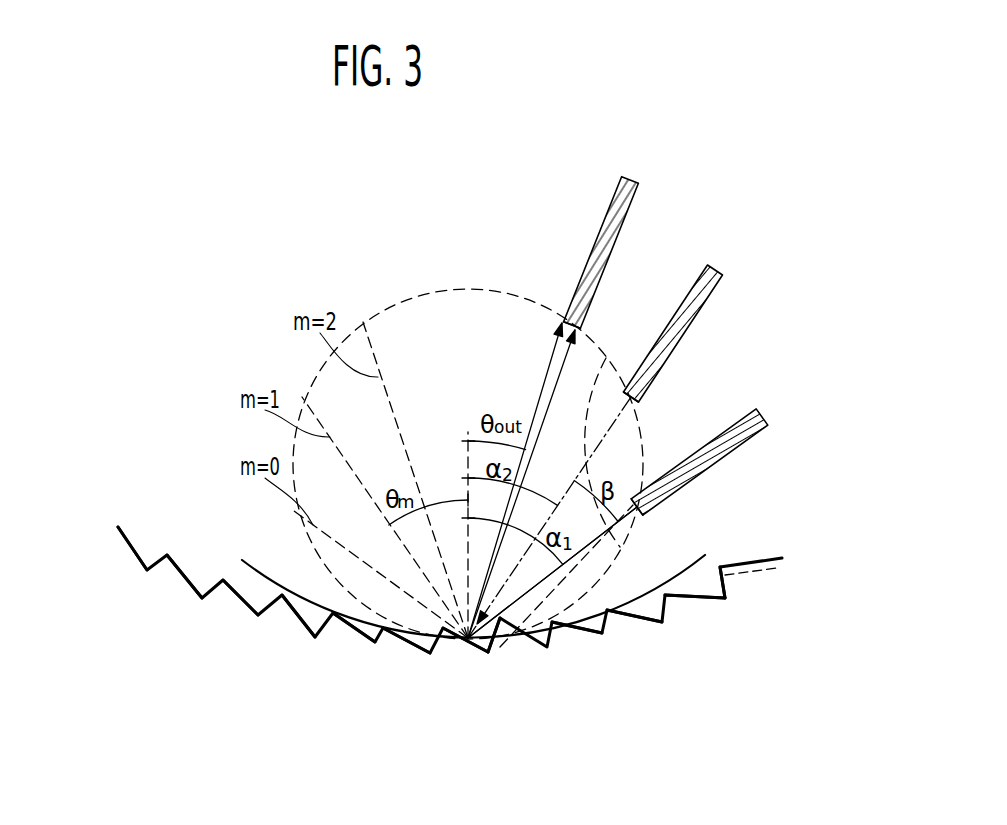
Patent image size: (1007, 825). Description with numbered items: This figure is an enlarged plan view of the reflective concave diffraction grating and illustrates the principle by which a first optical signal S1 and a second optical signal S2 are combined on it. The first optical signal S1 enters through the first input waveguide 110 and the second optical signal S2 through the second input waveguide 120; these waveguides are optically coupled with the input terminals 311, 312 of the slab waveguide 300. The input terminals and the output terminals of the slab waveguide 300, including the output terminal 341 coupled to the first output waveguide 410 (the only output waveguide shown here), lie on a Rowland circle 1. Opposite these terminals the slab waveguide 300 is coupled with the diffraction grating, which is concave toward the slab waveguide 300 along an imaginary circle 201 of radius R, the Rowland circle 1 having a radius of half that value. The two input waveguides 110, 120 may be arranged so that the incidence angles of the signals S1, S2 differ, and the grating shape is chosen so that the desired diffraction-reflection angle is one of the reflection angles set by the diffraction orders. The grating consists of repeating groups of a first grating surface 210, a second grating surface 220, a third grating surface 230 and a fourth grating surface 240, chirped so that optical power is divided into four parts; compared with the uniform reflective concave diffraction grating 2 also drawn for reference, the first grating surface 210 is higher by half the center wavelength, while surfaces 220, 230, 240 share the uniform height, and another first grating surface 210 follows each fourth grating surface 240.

The Rowland circle 1 is at (412, 290).
The uniform reflective concave diffraction grating 2 is at (760, 572).
The first input waveguide 110 is at (762, 408).
The second input waveguide 120 is at (716, 266).
The imaginary circle 201 is at (243, 590).
The first grating surface 210 is at (288, 610).
The second grating surface 220 is at (232, 577).
The third grating surface 230 is at (178, 575).
The fourth grating surface 240 is at (133, 553).
The slab waveguide 300 is at (488, 291).
The input terminal 311 is at (628, 497).
The input terminal 312 is at (642, 412).
The output terminal 341 is at (563, 318).
The first output waveguide 410 is at (630, 173).
The first optical signal S1 is at (622, 547).
The second optical signal S2 is at (607, 358).